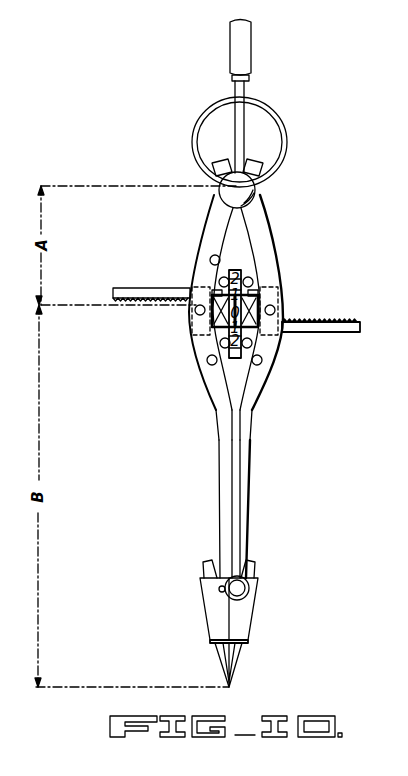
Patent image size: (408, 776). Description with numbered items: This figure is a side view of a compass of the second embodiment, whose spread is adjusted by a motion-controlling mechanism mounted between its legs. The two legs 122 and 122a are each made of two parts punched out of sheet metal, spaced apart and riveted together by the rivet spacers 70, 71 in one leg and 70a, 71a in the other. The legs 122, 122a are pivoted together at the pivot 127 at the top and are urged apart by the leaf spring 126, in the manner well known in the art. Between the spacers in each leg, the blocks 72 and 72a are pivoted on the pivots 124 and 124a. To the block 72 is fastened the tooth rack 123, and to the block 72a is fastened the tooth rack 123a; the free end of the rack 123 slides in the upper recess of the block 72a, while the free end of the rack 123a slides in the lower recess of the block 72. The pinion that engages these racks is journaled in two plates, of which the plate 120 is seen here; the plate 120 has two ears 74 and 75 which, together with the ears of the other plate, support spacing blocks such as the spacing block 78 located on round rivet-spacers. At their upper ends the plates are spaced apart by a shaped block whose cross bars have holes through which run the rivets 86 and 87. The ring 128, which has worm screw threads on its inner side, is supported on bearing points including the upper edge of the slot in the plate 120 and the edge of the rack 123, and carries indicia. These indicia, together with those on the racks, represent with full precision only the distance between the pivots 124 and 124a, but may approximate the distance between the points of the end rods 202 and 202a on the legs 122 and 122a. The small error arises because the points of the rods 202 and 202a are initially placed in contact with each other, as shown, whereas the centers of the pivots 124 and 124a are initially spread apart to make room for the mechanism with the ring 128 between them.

The rivet spacer 70 is at (268, 253).
The rivet spacer 70a is at (207, 256).
The rivet spacer 71 is at (264, 366).
The rivet spacer 71a is at (215, 338).
The block 72 is at (273, 335).
The block 72a is at (200, 340).
The ear 74 is at (262, 361).
The ear 75 is at (210, 299).
The spacing block 78 is at (258, 302).
The rivet 86 is at (219, 281).
The rivet 87 is at (253, 281).
The plate 120 is at (208, 361).
The leg 122 is at (249, 427).
The leg 122a is at (221, 427).
The tooth rack 123 is at (113, 290).
The tooth rack 123a is at (377, 313).
The pivot 124 is at (274, 311).
The pivot 124a is at (196, 312).
The leaf spring 126 is at (288, 137).
The pivot 127 is at (257, 193).
The ring 128 is at (212, 253).
The end rod 202 is at (238, 660).
The end rod 202a is at (221, 660).